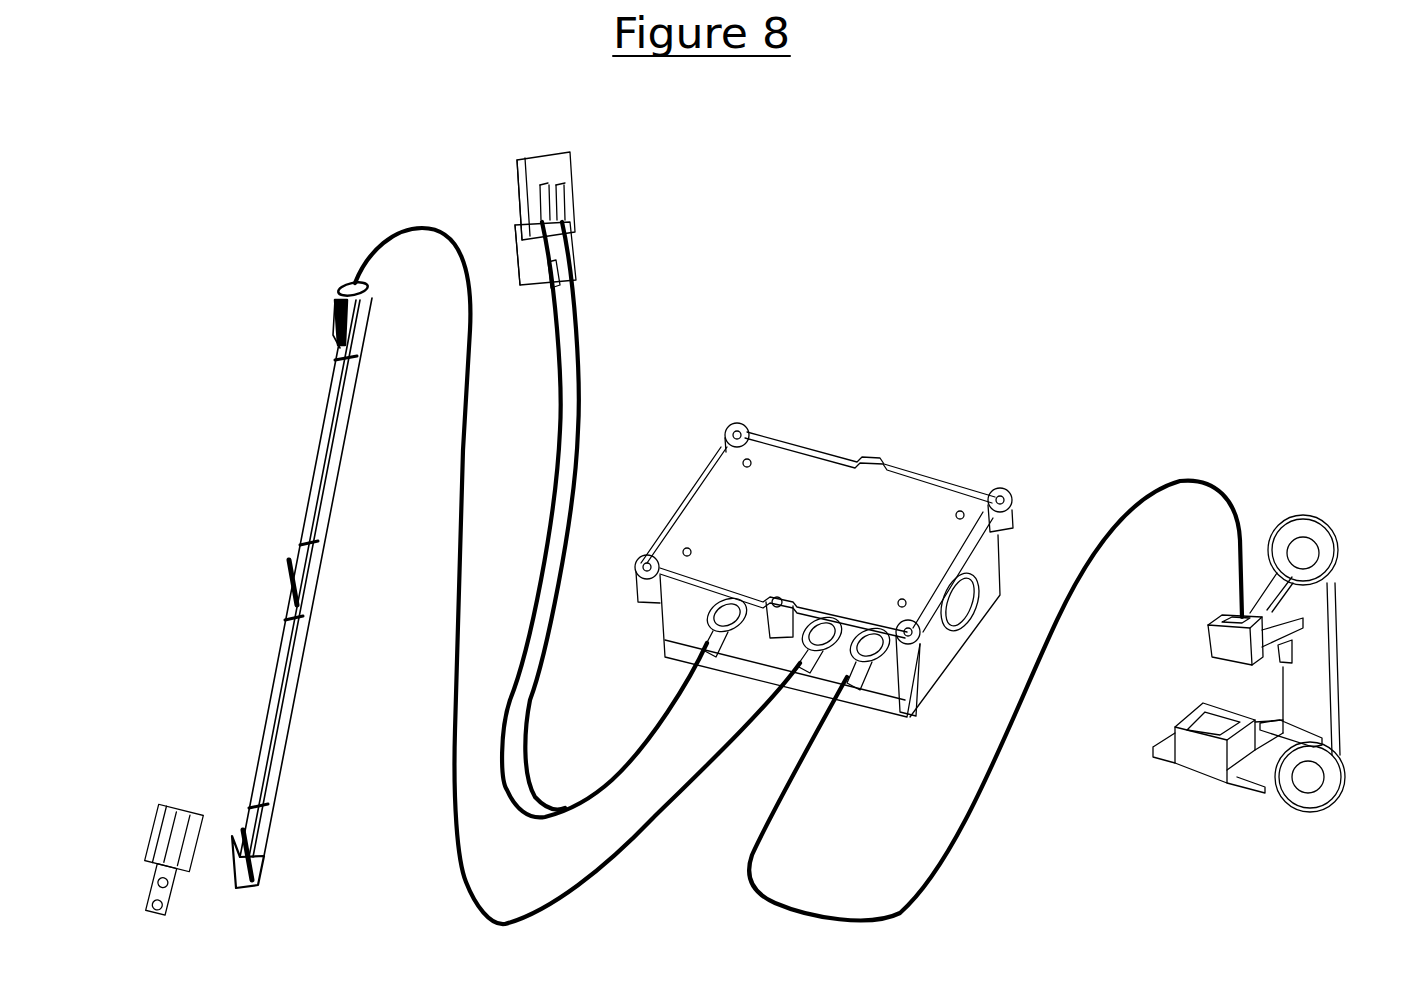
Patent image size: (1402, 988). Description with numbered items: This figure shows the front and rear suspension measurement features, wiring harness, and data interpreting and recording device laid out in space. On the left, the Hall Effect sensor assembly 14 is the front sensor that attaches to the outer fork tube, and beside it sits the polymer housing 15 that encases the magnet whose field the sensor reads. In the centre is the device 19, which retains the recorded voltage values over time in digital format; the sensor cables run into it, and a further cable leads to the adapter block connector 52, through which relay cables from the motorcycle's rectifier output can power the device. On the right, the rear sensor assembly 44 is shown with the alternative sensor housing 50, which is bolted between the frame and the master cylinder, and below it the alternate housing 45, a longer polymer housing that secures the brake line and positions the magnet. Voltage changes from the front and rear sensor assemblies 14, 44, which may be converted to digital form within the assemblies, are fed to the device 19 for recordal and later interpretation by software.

The Hall Effect sensor assembly 14 is at (310, 490).
The polymer housing 15 is at (158, 832).
The data recording device 19 is at (835, 517).
The sensor assembly 44 is at (1228, 604).
The alternate housing 45 is at (1203, 755).
The alternative sensor housing 50 is at (1307, 665).
The adapter block connector 52 is at (555, 174).